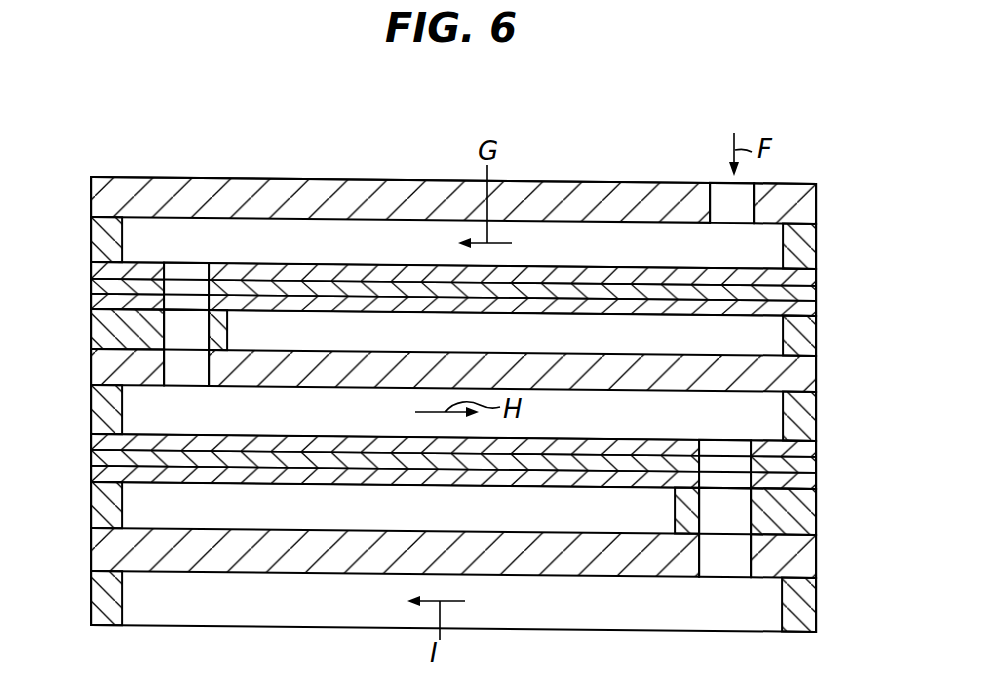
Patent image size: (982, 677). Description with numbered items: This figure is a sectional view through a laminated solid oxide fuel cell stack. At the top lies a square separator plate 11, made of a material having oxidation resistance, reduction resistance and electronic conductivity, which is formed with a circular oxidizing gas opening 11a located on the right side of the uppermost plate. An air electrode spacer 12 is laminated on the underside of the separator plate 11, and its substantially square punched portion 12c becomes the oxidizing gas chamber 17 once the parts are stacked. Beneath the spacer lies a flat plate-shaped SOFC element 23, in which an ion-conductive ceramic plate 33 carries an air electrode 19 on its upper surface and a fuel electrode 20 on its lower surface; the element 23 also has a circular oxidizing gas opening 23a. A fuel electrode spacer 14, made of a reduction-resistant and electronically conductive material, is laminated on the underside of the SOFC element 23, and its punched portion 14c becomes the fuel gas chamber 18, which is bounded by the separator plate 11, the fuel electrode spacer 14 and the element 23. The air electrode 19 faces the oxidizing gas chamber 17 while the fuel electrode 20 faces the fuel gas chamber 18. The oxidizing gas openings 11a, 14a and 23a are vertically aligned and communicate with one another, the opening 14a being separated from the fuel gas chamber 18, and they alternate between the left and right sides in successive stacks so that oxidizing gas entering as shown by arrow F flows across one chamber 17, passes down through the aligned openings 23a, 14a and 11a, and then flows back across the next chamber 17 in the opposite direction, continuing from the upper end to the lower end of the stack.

The separator plate 11 is at (581, 198).
The oxidizing gas opening 11a is at (718, 182).
The air electrode spacer 12 is at (819, 233).
The punched portion 12c is at (124, 238).
The fuel electrode spacer 14 is at (819, 330).
The oxidizing gas opening 14a is at (160, 322).
The punched portion 14c is at (222, 330).
The oxidizing gas chamber 17 is at (393, 259).
The fuel gas chamber 18 is at (558, 348).
The air electrode 19 is at (819, 270).
The fuel electrode 20 is at (819, 306).
The flat plate-shaped SOFC element 23 is at (83, 260).
The oxidizing gas opening 23a is at (170, 286).
The ion-conductive ceramic plate 33 is at (819, 289).